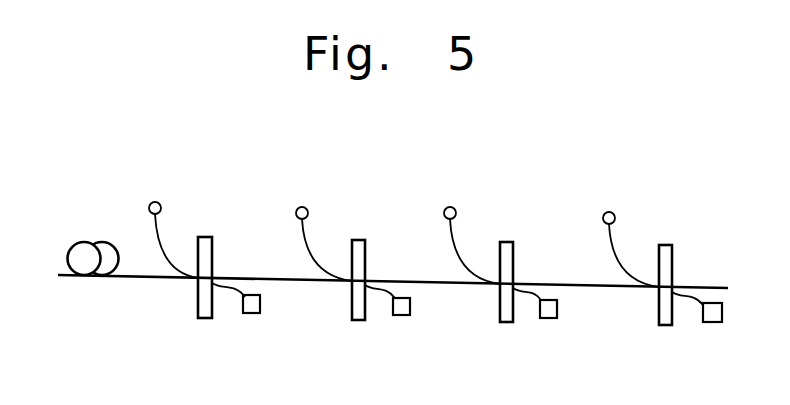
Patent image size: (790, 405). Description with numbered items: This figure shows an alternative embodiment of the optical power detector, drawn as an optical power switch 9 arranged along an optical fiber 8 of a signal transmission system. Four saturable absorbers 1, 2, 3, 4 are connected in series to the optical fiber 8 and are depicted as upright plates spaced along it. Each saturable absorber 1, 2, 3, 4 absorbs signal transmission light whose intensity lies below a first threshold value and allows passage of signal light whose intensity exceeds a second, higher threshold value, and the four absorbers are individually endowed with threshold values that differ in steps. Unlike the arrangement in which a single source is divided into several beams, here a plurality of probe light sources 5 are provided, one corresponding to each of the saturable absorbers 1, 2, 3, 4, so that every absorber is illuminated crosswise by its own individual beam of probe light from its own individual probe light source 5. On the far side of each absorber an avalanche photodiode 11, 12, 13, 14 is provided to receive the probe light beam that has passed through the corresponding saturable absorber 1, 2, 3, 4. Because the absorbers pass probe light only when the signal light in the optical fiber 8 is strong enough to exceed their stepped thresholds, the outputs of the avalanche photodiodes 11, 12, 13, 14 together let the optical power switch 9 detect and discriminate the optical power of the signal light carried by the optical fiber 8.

The saturable absorber 1 is at (212, 247).
The saturable absorber 2 is at (365, 250).
The saturable absorber 3 is at (513, 252).
The saturable absorber 4 is at (672, 255).
The probe light source 5 is at (161, 206).
The optical fiber 8 is at (125, 276).
The optical power switch 9 is at (410, 210).
The avalanche photodiode 11 is at (252, 313).
The avalanche photodiode 12 is at (401, 315).
The avalanche photodiode 13 is at (549, 318).
The avalanche photodiode 14 is at (714, 322).